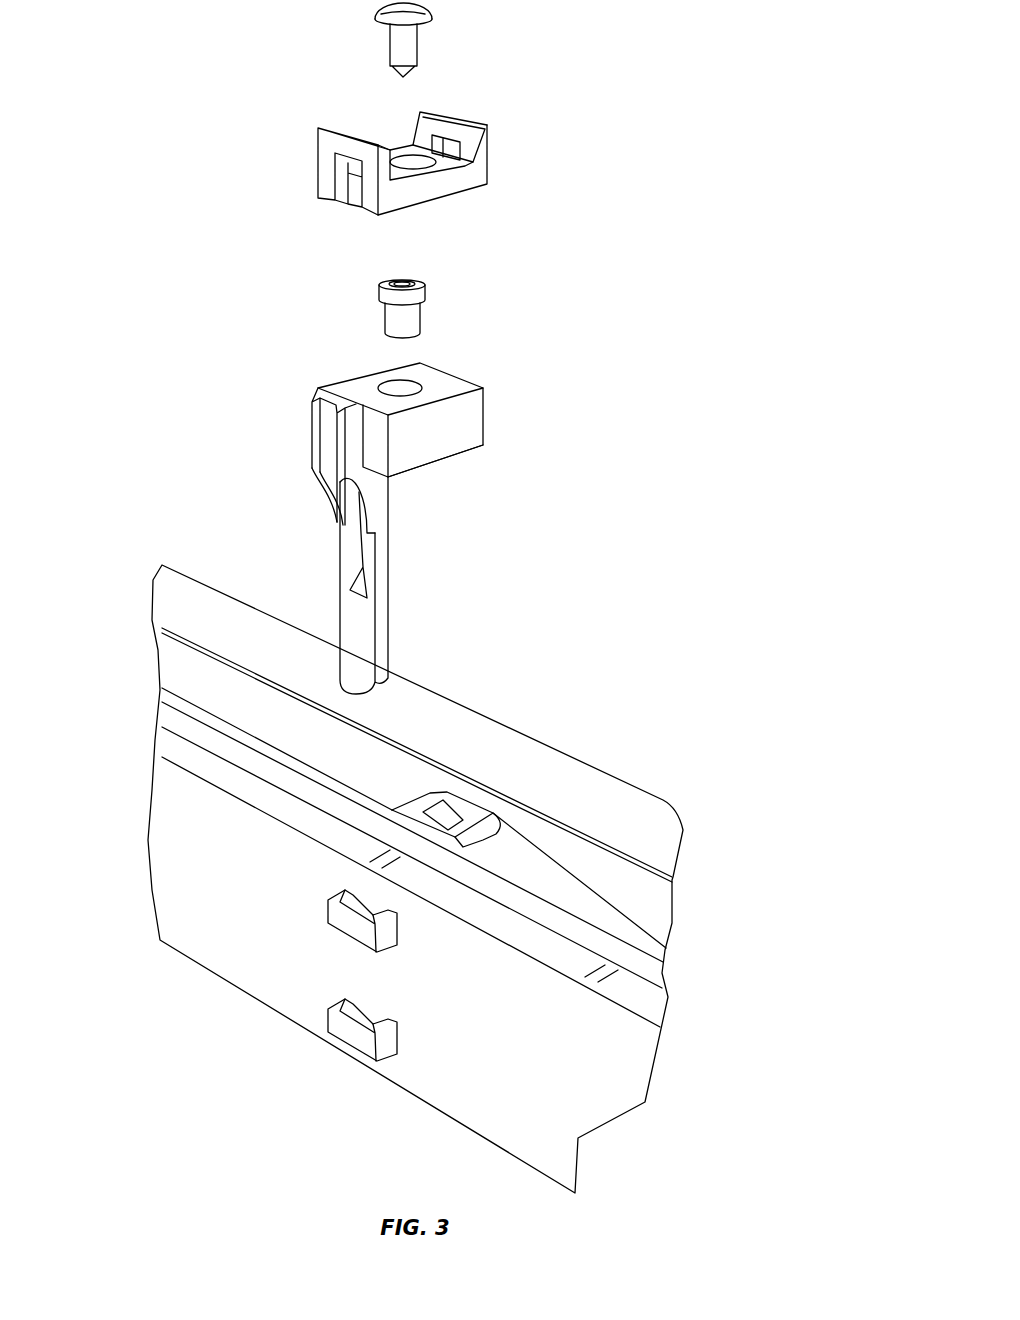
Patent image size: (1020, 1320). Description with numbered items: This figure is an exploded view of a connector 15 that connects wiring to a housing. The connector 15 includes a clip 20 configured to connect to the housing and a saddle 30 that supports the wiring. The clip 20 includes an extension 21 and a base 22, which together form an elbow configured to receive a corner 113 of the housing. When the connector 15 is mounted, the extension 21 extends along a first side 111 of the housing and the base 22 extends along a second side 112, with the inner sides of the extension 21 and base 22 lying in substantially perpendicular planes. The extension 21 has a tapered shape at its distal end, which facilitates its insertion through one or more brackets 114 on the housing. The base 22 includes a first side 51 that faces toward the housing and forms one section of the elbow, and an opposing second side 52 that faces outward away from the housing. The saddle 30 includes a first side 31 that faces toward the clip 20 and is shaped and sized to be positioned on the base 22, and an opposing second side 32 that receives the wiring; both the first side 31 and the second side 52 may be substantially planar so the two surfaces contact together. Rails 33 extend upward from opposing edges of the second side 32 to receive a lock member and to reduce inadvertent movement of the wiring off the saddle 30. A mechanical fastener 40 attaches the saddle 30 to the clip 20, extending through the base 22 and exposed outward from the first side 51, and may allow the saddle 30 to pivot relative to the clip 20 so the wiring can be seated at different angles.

The connector 15 is at (190, 202).
The mechanical fastener 40 is at (405, 52).
The saddle 30 is at (416, 160).
The first side 31 is at (427, 215).
The second side 32 is at (410, 153).
The rails 33 is at (337, 130).
The clip 20 is at (396, 516).
The extension 21 is at (355, 627).
The base 22 is at (439, 422).
The first side 51 is at (452, 455).
The second side 52 is at (440, 387).
The first side 111 is at (458, 879).
The second side 112 is at (562, 790).
The corner 113 is at (628, 953).
The brackets 114 is at (348, 1030).